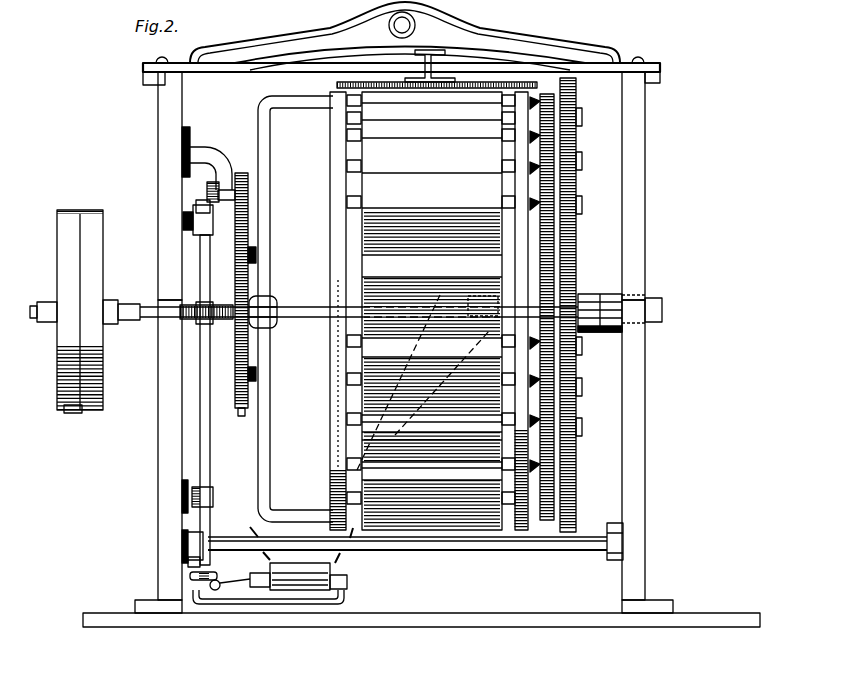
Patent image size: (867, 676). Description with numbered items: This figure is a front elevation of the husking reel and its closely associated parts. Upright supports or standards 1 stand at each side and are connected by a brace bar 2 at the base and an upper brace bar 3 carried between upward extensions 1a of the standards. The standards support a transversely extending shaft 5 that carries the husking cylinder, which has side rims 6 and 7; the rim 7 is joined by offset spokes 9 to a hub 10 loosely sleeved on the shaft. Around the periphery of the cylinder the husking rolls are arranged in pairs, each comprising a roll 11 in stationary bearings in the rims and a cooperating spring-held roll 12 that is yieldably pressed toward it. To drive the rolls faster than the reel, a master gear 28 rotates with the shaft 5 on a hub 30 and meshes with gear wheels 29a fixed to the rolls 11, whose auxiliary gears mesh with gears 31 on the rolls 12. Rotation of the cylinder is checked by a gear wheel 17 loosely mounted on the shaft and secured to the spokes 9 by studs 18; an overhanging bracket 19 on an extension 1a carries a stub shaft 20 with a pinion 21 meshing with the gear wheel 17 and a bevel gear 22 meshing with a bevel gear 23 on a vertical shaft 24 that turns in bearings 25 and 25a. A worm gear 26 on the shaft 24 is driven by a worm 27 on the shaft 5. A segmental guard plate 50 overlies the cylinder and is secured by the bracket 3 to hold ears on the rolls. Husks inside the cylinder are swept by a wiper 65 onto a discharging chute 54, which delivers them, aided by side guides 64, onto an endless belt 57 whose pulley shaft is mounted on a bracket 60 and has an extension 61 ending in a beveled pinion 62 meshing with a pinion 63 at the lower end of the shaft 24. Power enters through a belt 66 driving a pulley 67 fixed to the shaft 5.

The upright support 1 is at (166, 440).
The upward extension 1a is at (650, 176).
The brace bar 2 is at (440, 551).
The upper brace bar 3 is at (474, 44).
The shaft 5 is at (146, 306).
The side rim 6 is at (526, 530).
The side rim 7 is at (333, 250).
The offset spokes 9 is at (270, 142).
The hub 10 is at (270, 304).
The roll 11 is at (432, 296).
The roll 12 is at (432, 299).
The gear wheel 17 is at (240, 416).
The studs 18 is at (256, 258).
The overhanging bracket 19 is at (213, 153).
The stub shaft 20 is at (250, 193).
The pinion 21 is at (240, 173).
The bevel gear 22 is at (207, 197).
The bevel gear 23 is at (226, 212).
The vertical shaft 24 is at (200, 372).
The bearing 25 is at (213, 497).
The bearing 25a is at (182, 226).
The worm gear 26 is at (182, 316).
The worm 27 is at (214, 326).
The master gear 28 is at (580, 338).
The gear wheel 29a is at (572, 218).
The hub 30 is at (579, 240).
The gear 31 is at (579, 257).
The guard plate 50 is at (382, 82).
The discharging chute 54 is at (432, 428).
The endless belt 57 is at (307, 592).
The bracket 60 is at (246, 605).
The extension 61 is at (245, 584).
The beveled pinion 62 is at (214, 592).
The pinion 63 is at (190, 575).
The side guides 64 is at (262, 530).
The wiper 65 is at (427, 330).
The belt 66 is at (73, 413).
The pulley 67 is at (63, 360).